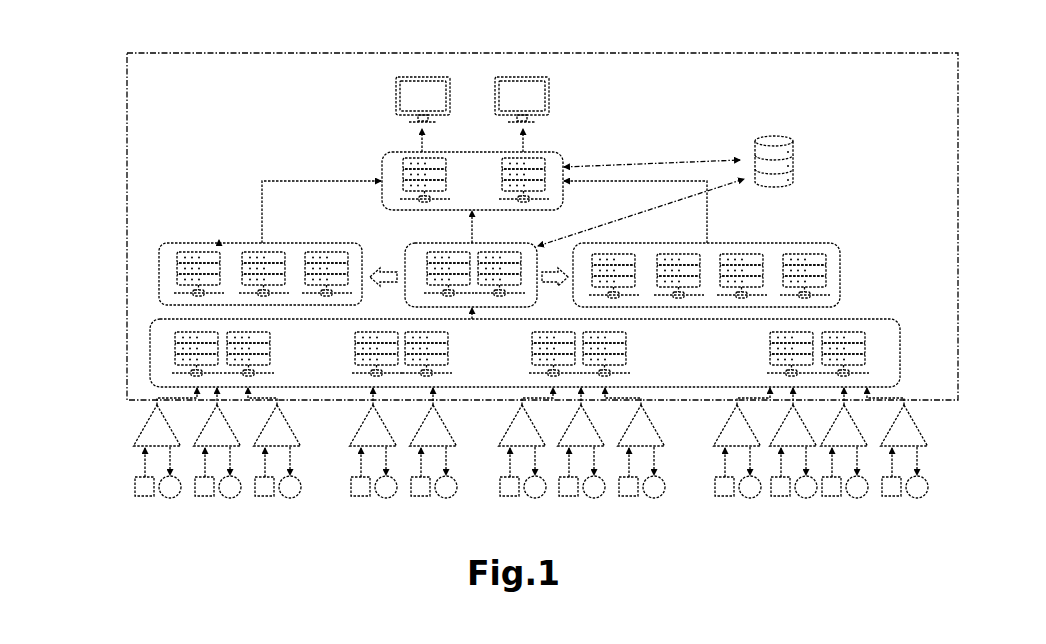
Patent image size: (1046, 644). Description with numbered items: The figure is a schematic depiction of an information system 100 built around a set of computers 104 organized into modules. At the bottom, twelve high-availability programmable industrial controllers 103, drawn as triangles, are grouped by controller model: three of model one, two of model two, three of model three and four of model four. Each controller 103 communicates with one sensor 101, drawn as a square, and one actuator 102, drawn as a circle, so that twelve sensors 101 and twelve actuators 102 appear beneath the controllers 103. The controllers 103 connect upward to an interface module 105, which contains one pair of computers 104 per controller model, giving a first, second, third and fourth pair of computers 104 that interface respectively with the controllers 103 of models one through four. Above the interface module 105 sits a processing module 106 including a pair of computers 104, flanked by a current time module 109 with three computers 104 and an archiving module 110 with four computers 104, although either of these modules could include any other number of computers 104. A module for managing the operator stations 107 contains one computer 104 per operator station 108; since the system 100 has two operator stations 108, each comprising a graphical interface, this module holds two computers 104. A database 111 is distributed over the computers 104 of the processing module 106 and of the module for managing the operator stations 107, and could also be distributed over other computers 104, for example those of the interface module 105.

The information system 100 is at (123, 109).
The sensor 101 is at (893, 498).
The actuator 102 is at (922, 498).
The high-availability programmable industrial controller 103 is at (920, 428).
The computer 104 is at (180, 333).
The interface module 105 is at (901, 320).
The processing module 106 is at (404, 252).
The module for managing the operator stations 107 is at (381, 168).
The operator station 108 is at (552, 90).
The current time module 109 is at (260, 253).
The archiving module 110 is at (845, 270).
The database 111 is at (797, 135).